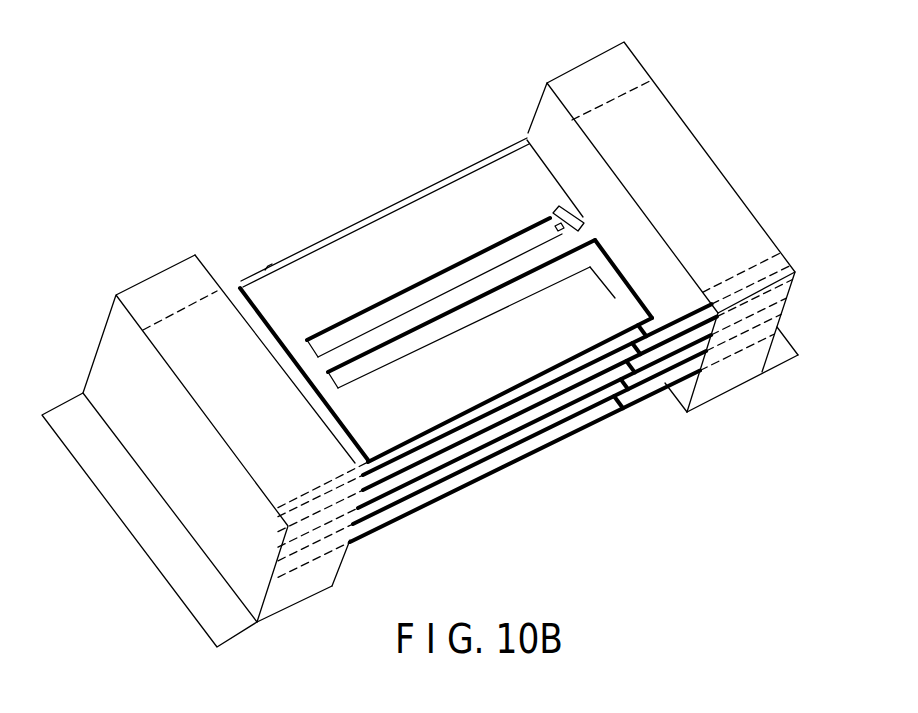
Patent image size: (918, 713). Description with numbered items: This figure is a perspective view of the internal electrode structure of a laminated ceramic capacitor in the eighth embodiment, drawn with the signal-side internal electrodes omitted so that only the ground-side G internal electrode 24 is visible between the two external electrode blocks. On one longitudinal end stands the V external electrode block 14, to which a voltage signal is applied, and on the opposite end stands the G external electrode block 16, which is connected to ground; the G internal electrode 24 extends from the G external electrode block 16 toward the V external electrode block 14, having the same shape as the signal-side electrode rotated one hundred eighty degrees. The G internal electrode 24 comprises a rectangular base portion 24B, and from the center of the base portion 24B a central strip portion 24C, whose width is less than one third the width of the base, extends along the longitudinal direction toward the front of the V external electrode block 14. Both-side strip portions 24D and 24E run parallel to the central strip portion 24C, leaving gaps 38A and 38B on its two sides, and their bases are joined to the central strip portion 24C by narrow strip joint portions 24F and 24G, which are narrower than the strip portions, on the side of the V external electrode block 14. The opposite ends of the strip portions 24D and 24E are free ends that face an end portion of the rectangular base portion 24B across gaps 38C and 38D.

The V external electrode block 14 is at (161, 290).
The G external electrode block 16 is at (589, 70).
The G internal electrode 24 is at (463, 393).
The rectangular base portion 24B is at (575, 175).
The central strip portion 24C is at (478, 290).
The both-side strip portion 24D is at (392, 222).
The both-side strip portion 24E is at (407, 425).
The narrow strip joint portion 24F is at (300, 347).
The narrow strip joint portion 24G is at (320, 367).
The gap 38A is at (368, 314).
The gap 38B is at (400, 347).
The gap 38C is at (537, 177).
The gap 38D is at (620, 293).